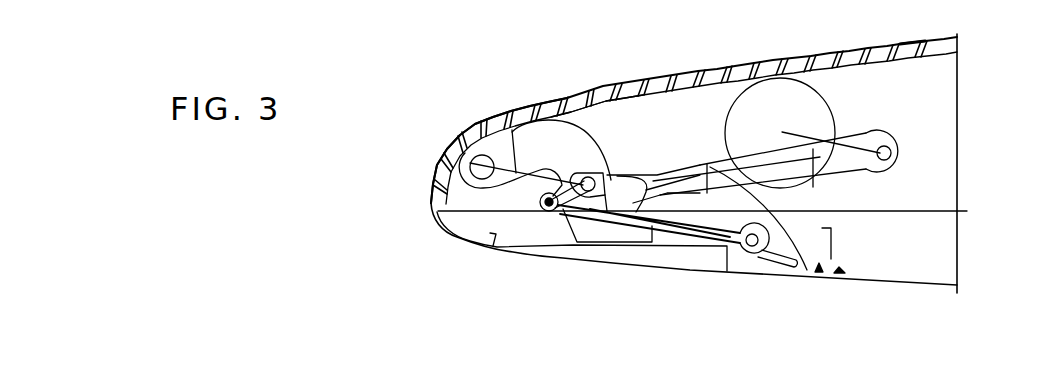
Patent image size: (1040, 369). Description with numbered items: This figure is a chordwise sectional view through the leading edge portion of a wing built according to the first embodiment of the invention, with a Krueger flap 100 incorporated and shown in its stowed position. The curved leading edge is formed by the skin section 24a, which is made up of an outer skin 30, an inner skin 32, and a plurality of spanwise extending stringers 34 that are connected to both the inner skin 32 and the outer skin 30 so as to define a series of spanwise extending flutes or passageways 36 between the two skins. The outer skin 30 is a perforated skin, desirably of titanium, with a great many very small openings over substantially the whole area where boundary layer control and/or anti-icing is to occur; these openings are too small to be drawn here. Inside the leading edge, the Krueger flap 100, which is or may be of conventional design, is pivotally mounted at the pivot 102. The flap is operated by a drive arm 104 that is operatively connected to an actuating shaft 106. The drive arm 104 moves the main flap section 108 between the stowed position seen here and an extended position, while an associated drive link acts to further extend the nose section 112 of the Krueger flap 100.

The skin section 24a is at (600, 86).
The outer skin 30 is at (533, 108).
The inner skin 32 is at (584, 110).
The stringers 34 is at (708, 45).
The flutes or passageways 36 is at (780, 38).
The Krueger flap 100 is at (633, 268).
The pivot 102 is at (470, 153).
The drive arm 104 is at (640, 184).
The actuating shaft 106 is at (813, 115).
The main flap section 108 is at (683, 257).
The nose section 112 is at (778, 206).